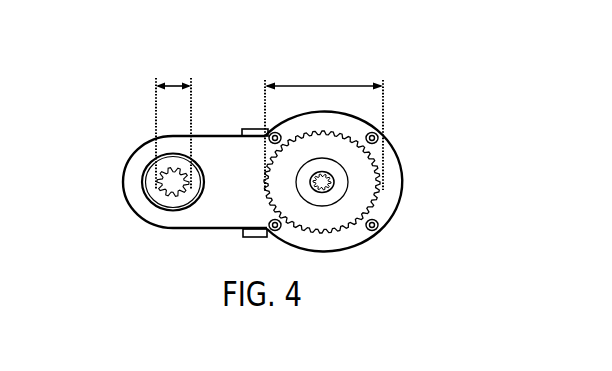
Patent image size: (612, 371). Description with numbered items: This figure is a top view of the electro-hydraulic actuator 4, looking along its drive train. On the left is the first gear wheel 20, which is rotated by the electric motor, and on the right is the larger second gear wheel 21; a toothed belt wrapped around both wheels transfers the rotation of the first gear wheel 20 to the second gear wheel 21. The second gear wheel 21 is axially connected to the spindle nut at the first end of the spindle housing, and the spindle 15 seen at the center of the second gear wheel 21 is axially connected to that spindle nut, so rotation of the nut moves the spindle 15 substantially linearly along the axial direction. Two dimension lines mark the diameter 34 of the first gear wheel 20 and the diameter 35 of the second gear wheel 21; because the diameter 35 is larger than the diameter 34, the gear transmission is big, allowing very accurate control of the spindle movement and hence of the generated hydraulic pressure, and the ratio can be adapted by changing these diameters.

The electro-hydraulic actuator 4 is at (403, 44).
The spindle 15 is at (322, 182).
The first gear wheel 20 is at (172, 187).
The second gear wheel 21 is at (360, 195).
The diameter of the first gear wheel 34 is at (173, 124).
The diameter of the second gear wheel 35 is at (324, 126).